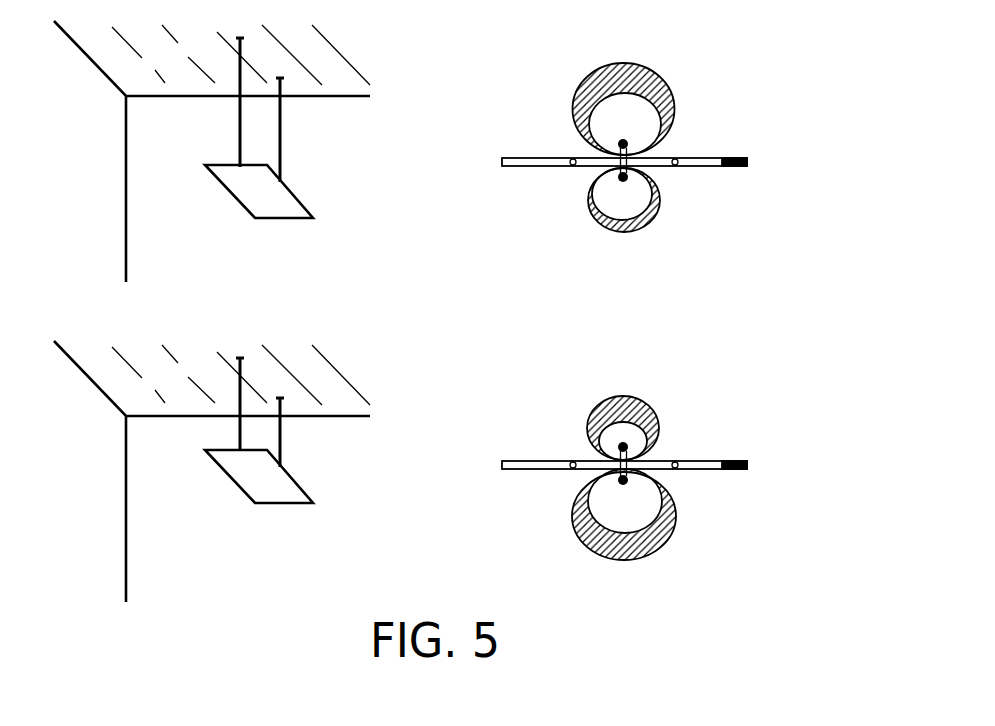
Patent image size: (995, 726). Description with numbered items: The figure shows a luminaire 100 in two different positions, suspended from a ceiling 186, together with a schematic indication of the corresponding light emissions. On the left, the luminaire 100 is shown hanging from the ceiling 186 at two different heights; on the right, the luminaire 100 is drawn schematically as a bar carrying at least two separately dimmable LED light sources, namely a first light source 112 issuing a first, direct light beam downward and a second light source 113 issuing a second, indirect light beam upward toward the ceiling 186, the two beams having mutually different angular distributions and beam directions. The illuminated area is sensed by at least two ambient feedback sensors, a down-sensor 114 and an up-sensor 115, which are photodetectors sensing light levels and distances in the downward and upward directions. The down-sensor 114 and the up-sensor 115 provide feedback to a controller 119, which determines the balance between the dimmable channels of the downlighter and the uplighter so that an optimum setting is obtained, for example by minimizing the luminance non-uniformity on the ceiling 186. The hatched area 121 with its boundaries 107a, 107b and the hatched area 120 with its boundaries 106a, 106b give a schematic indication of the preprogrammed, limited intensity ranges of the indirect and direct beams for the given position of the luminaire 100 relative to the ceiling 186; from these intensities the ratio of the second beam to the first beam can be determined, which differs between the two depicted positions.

The ceiling 186 is at (183, 66).
The luminaire 100 is at (278, 212).
The boundary of second indirect light beam 107b is at (637, 65).
The boundary of second indirect light beam 107a is at (668, 110).
The boundary of first direct light beam 106b is at (638, 231).
The boundary of first direct light beam 106a is at (648, 221).
The second light source 113 is at (623, 144).
The first light source 112 is at (620, 184).
The down-sensor 114 is at (572, 158).
The up-sensor 115 is at (676, 158).
The controller 119 is at (737, 167).
The hatched area 121 is at (608, 66).
The hatched area 120 is at (612, 231).